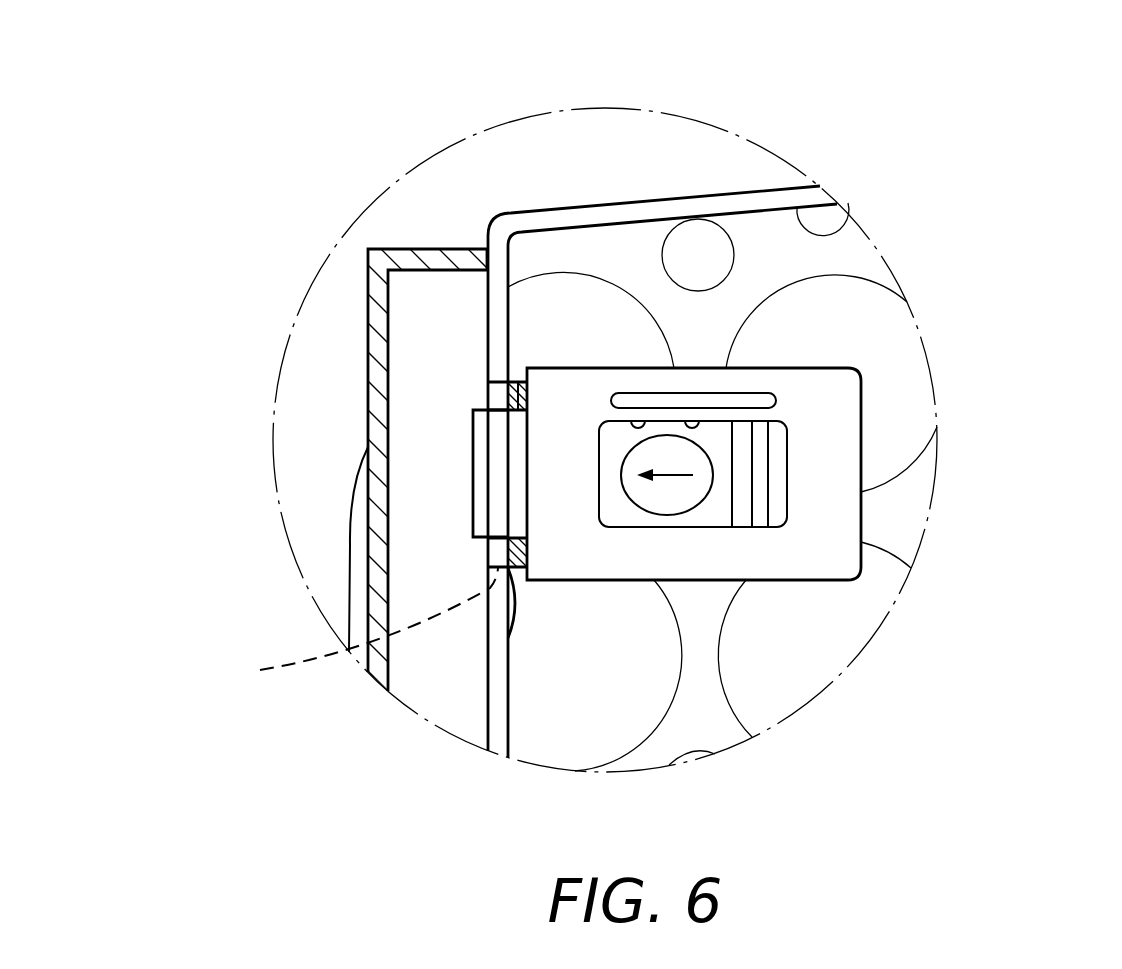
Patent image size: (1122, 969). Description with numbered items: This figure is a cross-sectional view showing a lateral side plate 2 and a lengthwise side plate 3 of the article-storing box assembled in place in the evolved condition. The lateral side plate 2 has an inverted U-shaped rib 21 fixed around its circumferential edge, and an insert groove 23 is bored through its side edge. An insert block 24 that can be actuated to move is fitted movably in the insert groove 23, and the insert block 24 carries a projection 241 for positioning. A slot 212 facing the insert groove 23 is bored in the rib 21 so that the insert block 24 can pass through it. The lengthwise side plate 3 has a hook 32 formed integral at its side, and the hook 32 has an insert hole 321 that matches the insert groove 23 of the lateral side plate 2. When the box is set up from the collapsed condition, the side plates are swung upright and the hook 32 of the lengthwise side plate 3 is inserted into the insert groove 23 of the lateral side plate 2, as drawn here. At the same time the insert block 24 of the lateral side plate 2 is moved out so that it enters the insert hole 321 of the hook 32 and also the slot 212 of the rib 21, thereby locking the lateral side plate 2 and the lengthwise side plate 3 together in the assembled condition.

The lateral side plate 2 is at (893, 430).
The rib 21 is at (723, 203).
The slot 212 is at (350, 627).
The lengthwise side plate 3 is at (368, 362).
The hook 32 is at (518, 382).
The insert hole 321 is at (515, 395).
The insert groove 23 is at (508, 640).
The insert block 24 is at (715, 512).
The projection 241 is at (690, 422).